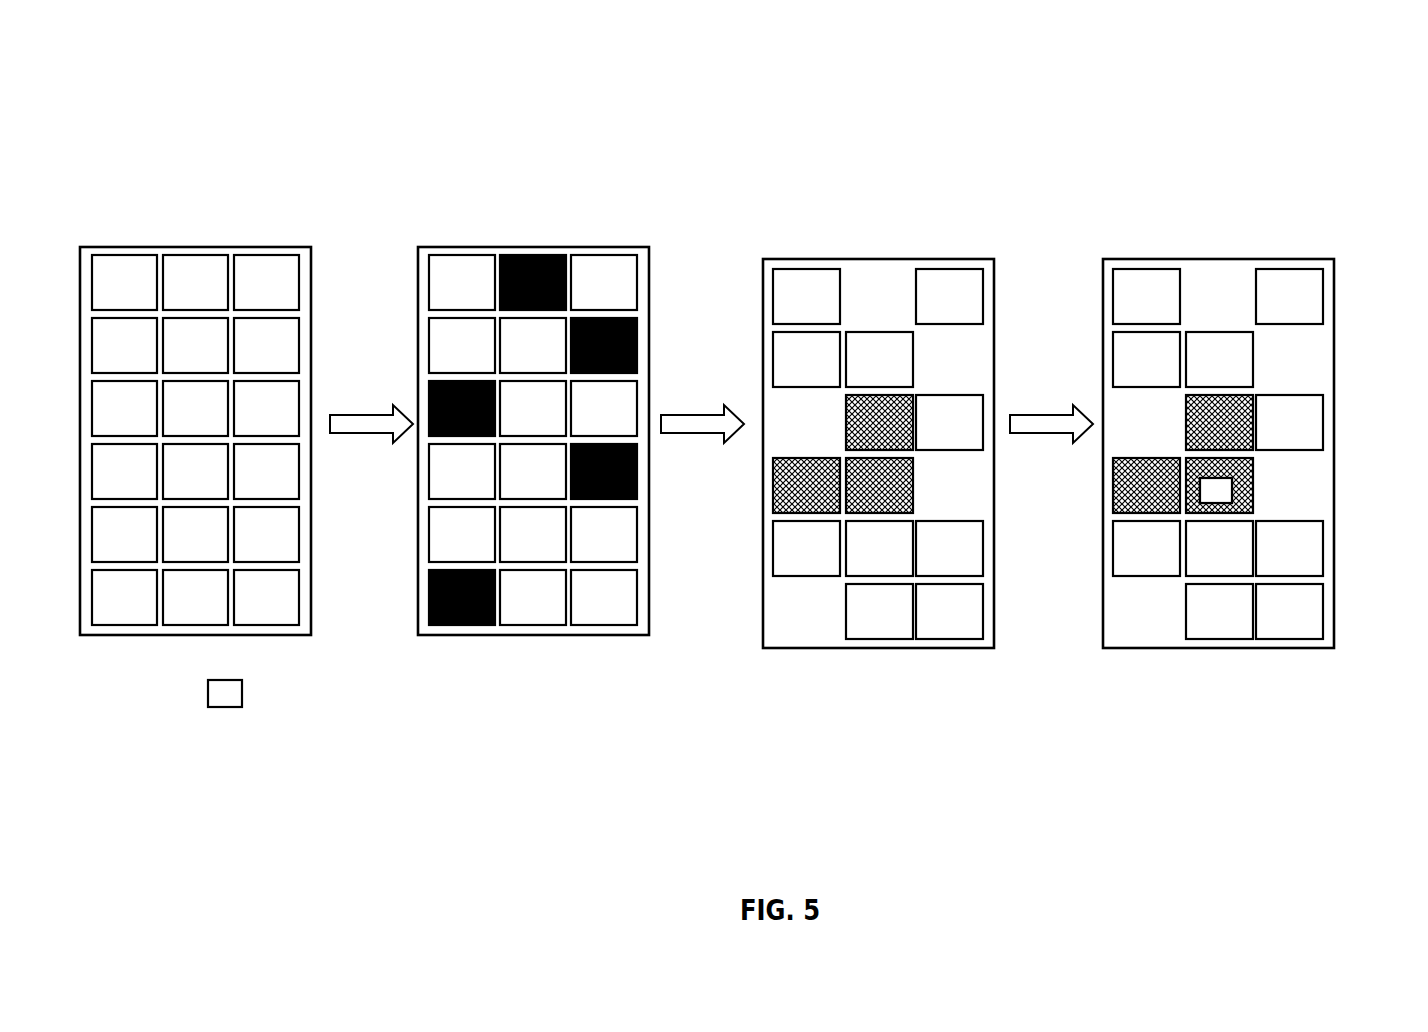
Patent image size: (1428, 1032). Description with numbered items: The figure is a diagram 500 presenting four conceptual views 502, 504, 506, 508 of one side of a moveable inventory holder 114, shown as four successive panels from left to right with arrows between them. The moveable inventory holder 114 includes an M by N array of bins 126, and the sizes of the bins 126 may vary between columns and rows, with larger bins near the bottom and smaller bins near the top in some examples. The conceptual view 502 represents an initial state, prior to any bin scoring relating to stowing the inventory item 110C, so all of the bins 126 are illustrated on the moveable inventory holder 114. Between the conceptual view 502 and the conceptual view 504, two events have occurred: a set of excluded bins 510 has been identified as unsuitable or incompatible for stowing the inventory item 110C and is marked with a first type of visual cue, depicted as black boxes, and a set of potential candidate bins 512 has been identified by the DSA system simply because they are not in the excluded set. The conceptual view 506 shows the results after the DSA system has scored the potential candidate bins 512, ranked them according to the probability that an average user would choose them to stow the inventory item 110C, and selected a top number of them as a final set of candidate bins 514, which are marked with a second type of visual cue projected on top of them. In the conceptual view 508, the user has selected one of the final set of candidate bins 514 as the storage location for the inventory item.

The diagram 500 is at (1251, 73).
The conceptual view 502 is at (206, 218).
The conceptual view 504 is at (540, 220).
The conceptual view 506 is at (892, 236).
The conceptual view 508 is at (1226, 229).
The excluded bins 510 is at (640, 337).
The potential candidate bins 512 is at (630, 534).
The final set of candidate bins 514 is at (907, 425).
The bins 126 is at (278, 474).
The moveable inventory holder 114 is at (328, 524).
The inventory item 110C is at (238, 697).